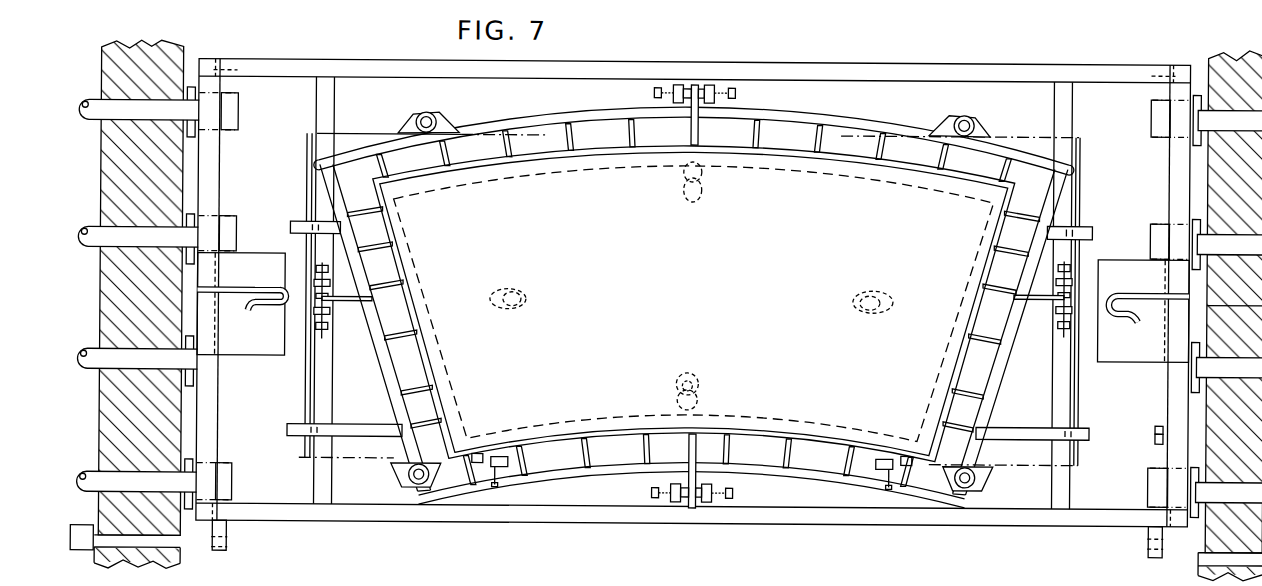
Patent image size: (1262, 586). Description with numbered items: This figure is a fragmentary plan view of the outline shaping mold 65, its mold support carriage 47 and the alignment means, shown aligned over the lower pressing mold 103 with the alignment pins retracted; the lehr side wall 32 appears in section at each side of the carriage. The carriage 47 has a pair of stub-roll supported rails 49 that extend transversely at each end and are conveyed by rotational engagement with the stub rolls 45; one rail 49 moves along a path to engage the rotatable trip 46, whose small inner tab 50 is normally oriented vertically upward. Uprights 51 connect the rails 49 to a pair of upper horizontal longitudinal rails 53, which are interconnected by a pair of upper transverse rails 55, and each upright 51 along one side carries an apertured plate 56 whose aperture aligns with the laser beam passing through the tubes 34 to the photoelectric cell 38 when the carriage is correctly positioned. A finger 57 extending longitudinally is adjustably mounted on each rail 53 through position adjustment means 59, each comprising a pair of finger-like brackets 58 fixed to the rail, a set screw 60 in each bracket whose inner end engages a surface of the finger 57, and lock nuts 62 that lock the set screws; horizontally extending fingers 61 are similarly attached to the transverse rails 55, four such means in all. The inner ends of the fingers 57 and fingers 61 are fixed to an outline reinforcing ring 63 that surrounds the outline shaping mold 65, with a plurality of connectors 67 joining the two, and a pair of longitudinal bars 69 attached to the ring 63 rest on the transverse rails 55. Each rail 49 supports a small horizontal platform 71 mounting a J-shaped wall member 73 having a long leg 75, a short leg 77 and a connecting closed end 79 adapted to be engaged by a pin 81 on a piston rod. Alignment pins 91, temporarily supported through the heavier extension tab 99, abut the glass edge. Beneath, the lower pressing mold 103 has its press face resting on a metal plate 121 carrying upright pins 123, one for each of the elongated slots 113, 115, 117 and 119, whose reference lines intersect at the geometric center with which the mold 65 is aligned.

The wall 32 is at (1236, 563).
The tubes 34 is at (156, 557).
The photoelectric cell 38 is at (86, 533).
The stub rolls 45 is at (230, 217).
The rotatable trip 46 is at (1153, 439).
The mold support carriage 47 is at (827, 531).
The stub-roll supported rails 49 is at (1176, 155).
The small inner tab 50 is at (1156, 431).
The uprights 51 is at (226, 69).
The upper horizontal longitudinal rails 53 is at (893, 63).
The upper transverse rails 55 is at (305, 417).
The apertured plate 56 is at (229, 552).
The finger 57 is at (656, 111).
The finger-like brackets 58 is at (676, 84).
The position adjustment means 59 is at (695, 70).
The set screw 60 is at (654, 90).
The horizontally extending fingers 61 is at (340, 307).
The lock nuts 62 is at (678, 86).
The outline reinforcing ring 63 is at (994, 377).
The outline shaping mold 65 is at (492, 161).
The connectors 67 is at (548, 141).
The longitudinal bars 69 is at (300, 228).
The horizontal platform 71 is at (248, 359).
The J-shaped wall member 73 is at (1132, 285).
The long leg 75 is at (236, 289).
The short leg 77 is at (258, 303).
The connecting closed end 79 is at (286, 295).
The pin 81 is at (80, 301).
The alignment pin 91 is at (479, 455).
The extension tab 99 is at (498, 471).
The lower pressing mold 103 is at (706, 300).
The elongated slot 113 is at (704, 182).
The elongated slot 115 is at (700, 402).
The elongated slot 117 is at (506, 312).
The elongated slot 119 is at (885, 289).
The metal plate 121 is at (1020, 464).
The upright pins 123 is at (861, 289).